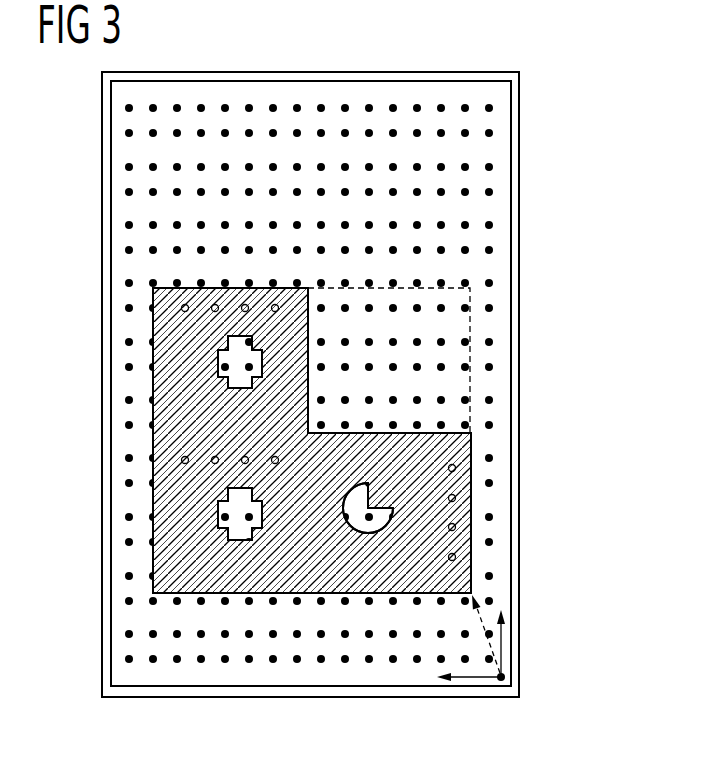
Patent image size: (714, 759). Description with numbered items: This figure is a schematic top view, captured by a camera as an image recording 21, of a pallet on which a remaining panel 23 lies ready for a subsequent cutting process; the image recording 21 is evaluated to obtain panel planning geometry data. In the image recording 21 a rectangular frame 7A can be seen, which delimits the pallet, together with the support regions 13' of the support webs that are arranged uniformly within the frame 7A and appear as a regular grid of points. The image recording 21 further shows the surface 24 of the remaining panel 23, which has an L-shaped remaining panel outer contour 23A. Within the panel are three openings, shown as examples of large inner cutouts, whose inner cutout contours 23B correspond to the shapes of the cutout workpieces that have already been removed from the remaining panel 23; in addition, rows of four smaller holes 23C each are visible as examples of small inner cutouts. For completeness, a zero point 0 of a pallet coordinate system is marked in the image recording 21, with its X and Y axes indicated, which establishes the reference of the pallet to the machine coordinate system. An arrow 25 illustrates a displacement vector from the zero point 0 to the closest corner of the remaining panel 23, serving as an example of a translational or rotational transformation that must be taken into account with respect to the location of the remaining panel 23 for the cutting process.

The image recording 21 is at (562, 91).
The rectangular frame 7A is at (519, 163).
The support regions 13' is at (347, 383).
The remaining panel 23 is at (137, 589).
The remaining panel outer contour 23A is at (472, 503).
The inner cutout contours 23B is at (218, 357).
The smaller holes 23C is at (162, 463).
The surface 24 is at (428, 447).
The arrow 25 is at (481, 613).
The zero point 0 is at (507, 677).
The X axis X is at (503, 645).
The Y axis Y is at (475, 678).